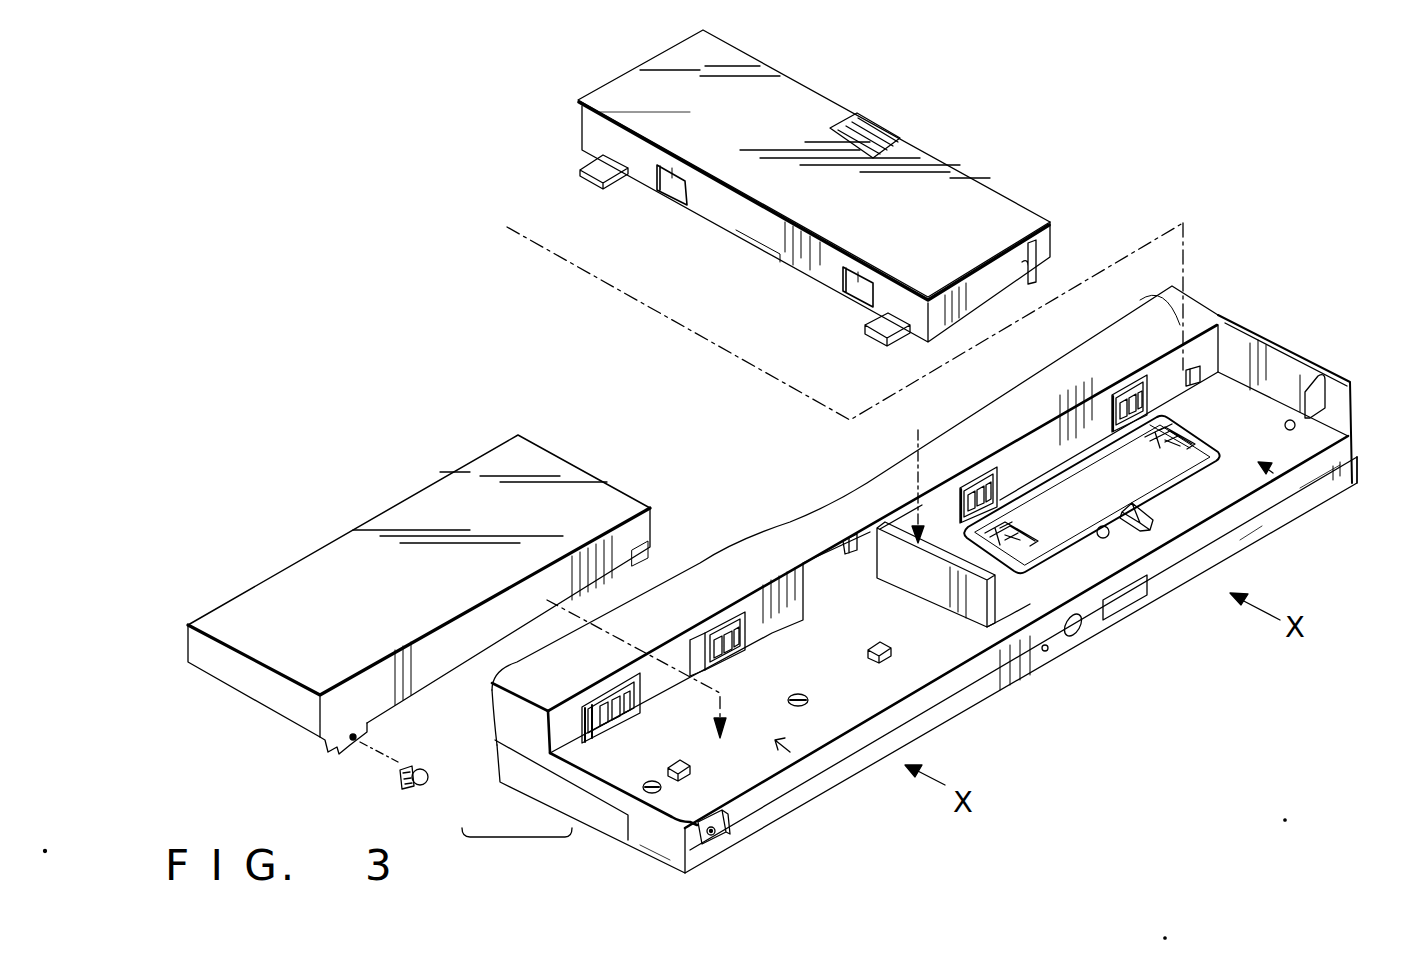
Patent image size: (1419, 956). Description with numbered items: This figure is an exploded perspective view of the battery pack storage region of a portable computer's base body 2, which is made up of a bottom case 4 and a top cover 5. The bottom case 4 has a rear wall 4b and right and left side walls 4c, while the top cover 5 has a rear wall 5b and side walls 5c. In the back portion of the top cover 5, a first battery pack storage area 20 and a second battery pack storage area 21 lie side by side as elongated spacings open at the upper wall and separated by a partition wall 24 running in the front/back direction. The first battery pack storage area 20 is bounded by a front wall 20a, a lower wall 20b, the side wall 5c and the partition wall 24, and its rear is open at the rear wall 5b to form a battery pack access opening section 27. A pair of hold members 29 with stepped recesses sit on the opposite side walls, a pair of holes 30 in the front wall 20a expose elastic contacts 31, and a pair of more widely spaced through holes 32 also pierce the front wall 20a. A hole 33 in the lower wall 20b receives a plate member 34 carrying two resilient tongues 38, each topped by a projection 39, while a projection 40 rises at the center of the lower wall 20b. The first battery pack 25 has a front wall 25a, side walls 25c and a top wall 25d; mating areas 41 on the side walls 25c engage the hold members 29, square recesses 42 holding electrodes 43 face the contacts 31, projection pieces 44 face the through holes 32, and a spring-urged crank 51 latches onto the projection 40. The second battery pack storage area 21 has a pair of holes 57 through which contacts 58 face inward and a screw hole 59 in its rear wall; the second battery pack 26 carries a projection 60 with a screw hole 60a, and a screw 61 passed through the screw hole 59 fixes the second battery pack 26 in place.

The base body 2 is at (517, 847).
The bottom case 4 is at (578, 803).
The rear wall 4b is at (1345, 488).
The side walls 4c is at (660, 857).
The top cover 5 is at (518, 740).
The rear wall 5b is at (1335, 460).
The side walls 5c is at (1276, 362).
The first battery pack storage area 20 is at (1262, 483).
The front wall 20a is at (1015, 455).
The lower wall 20b is at (1052, 655).
The second battery pack storage area 21 is at (792, 746).
The partition wall 24 is at (918, 592).
The first battery pack 25 is at (972, 190).
The front wall 25a is at (738, 232).
The side walls 25c is at (977, 298).
The top wall 25d is at (800, 90).
The second battery pack 26 is at (337, 560).
The battery pack access opening section 27 is at (1248, 533).
The hold members 29 is at (1322, 395).
The holes 30 is at (1128, 385).
The elastic contacts 31 is at (1108, 400).
The through holes 32 is at (1200, 372).
The hole 33 is at (1198, 436).
The plate member 34 is at (1050, 548).
The tongues 38 is at (1068, 560).
The projection 39 is at (1020, 530).
The projection 40 is at (1140, 532).
The mating areas 41 is at (1046, 262).
The square recesses 42 is at (678, 174).
The electrodes 43 is at (676, 200).
The projection pieces 44 is at (582, 162).
The crank 51 is at (883, 132).
The holes 57 is at (637, 698).
The contacts 58 is at (600, 690).
The screw hole 59 is at (728, 832).
The projection 60 is at (352, 742).
The screw hole 60a is at (355, 735).
The screw 61 is at (414, 786).